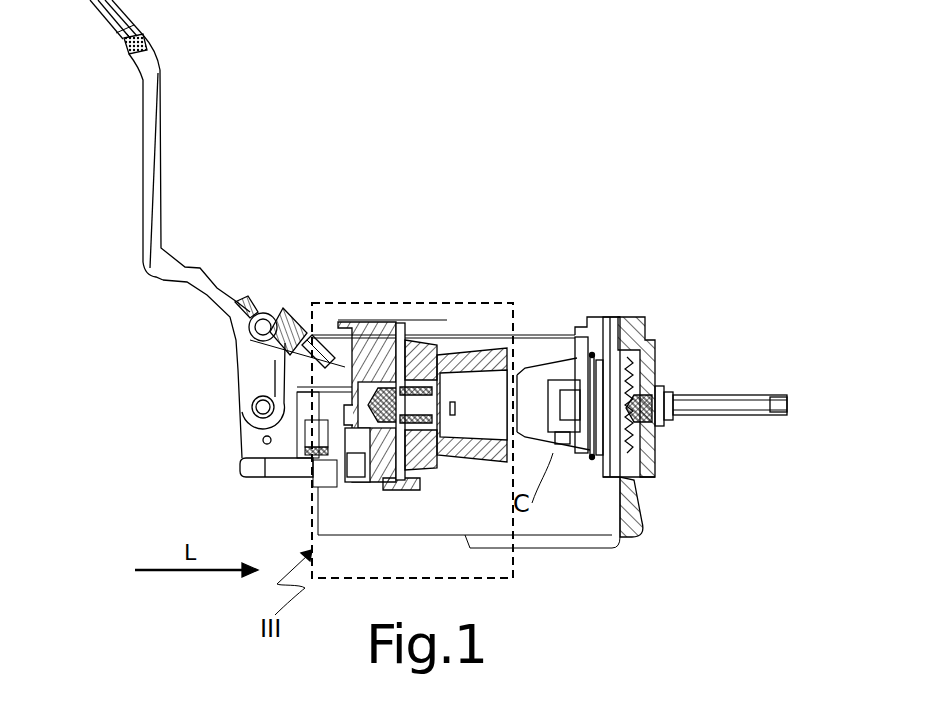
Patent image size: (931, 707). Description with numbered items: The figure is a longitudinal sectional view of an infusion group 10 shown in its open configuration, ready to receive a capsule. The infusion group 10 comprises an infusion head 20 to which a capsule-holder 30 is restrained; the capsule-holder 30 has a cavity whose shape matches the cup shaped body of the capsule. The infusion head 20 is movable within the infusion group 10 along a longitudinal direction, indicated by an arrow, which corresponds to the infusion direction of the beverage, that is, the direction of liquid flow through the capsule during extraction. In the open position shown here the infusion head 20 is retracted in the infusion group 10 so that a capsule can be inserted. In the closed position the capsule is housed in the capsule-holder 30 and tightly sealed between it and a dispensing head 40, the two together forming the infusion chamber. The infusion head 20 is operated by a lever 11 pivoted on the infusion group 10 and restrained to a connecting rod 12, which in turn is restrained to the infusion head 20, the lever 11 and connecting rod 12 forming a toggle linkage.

The infusion group 10 is at (507, 214).
The lever 11 is at (150, 130).
The connecting rod 12 is at (302, 347).
The infusion head 20 is at (378, 350).
The capsule-holder 30 is at (487, 353).
The dispensing head 40 is at (628, 333).